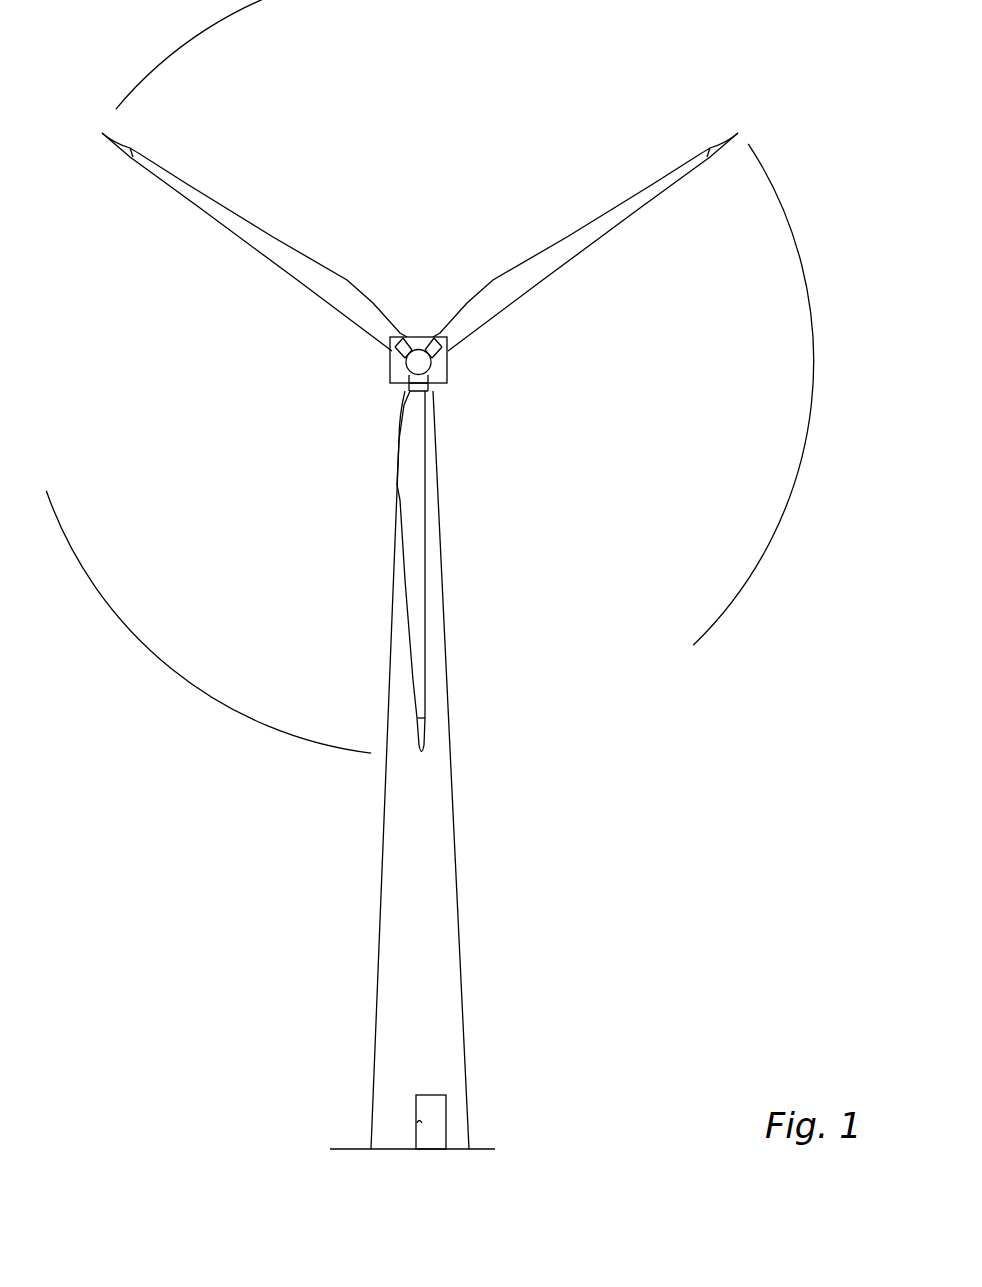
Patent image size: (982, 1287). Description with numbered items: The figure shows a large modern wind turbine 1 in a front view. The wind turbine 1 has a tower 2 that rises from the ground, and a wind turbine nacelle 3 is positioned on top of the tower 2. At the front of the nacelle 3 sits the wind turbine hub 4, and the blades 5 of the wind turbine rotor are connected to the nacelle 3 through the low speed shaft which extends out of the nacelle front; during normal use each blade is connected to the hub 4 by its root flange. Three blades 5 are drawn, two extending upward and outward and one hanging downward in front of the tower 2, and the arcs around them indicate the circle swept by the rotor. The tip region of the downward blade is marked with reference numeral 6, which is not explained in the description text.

The wind turbine 1 is at (429, 574).
The tower 2 is at (448, 847).
The wind turbine nacelle 3 is at (448, 383).
The wind turbine hub 4 is at (392, 353).
The blades 5 is at (469, 591).
The blade tip 6 is at (420, 737).